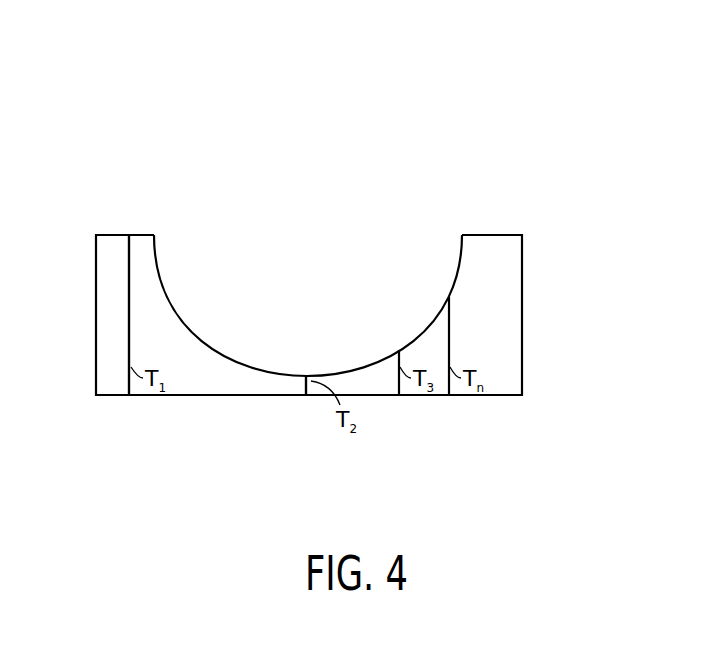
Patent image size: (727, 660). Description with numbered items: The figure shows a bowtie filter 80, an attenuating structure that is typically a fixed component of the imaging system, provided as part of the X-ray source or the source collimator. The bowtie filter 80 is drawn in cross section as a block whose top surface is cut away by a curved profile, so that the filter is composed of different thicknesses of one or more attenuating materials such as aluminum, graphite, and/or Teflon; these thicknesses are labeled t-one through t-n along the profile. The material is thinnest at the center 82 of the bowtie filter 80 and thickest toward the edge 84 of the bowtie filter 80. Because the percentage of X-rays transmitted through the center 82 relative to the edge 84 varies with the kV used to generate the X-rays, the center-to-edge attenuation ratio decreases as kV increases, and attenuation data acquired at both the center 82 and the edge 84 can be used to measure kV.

The bowtie filter 80 is at (485, 221).
The center 82 is at (306, 396).
The edge 84 is at (129, 396).